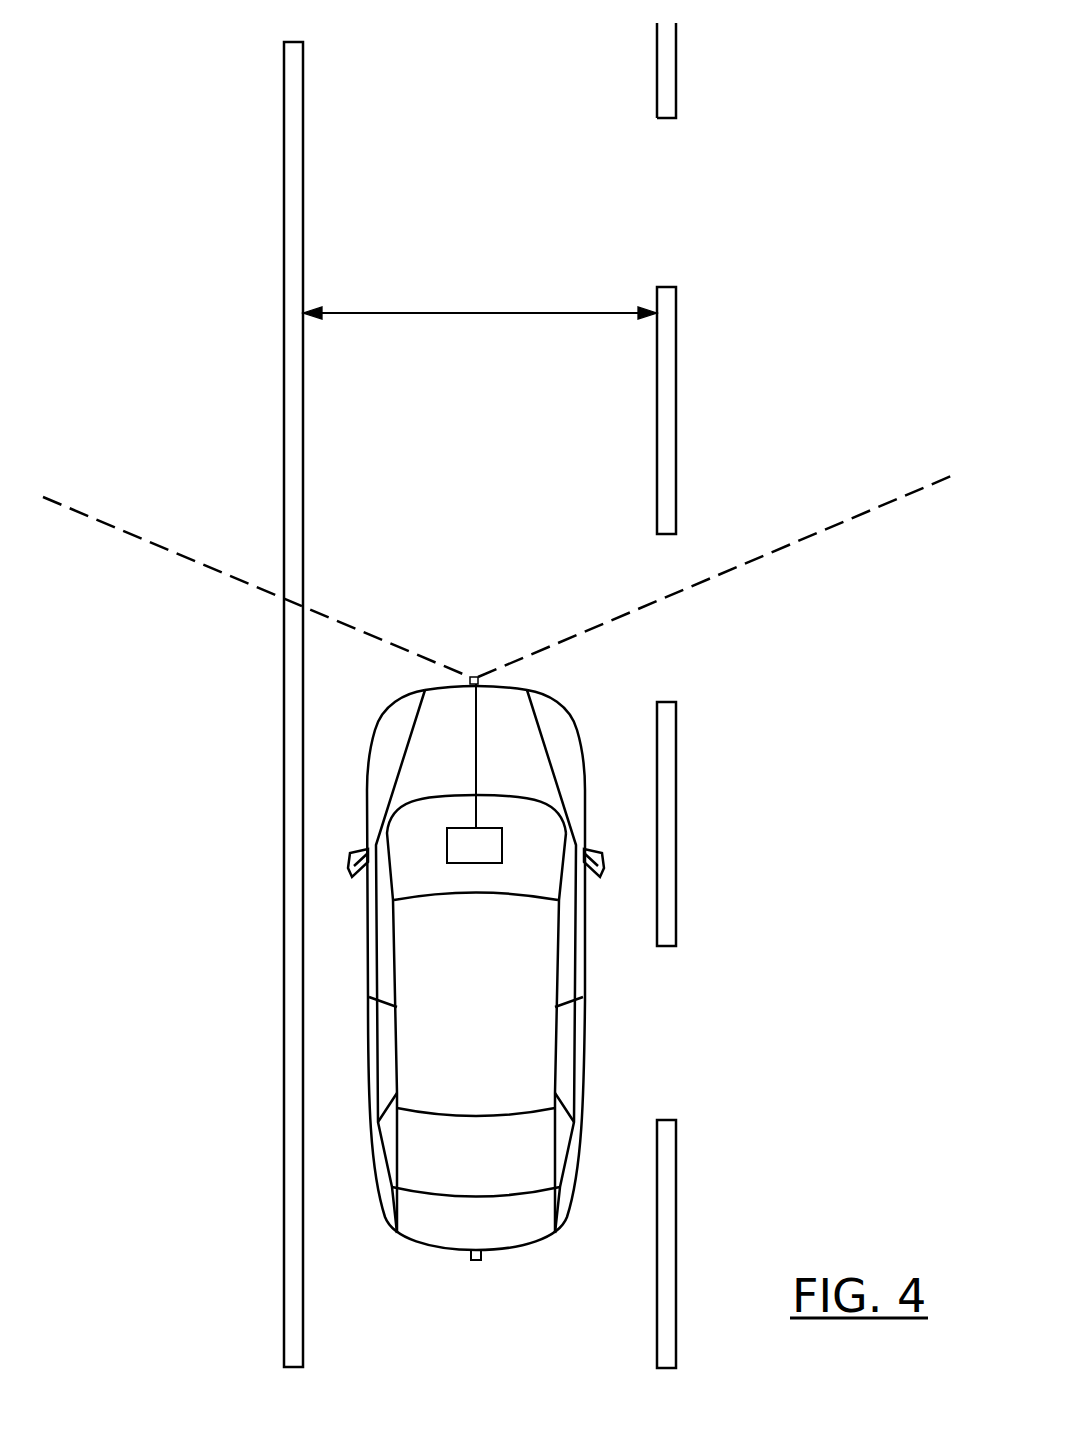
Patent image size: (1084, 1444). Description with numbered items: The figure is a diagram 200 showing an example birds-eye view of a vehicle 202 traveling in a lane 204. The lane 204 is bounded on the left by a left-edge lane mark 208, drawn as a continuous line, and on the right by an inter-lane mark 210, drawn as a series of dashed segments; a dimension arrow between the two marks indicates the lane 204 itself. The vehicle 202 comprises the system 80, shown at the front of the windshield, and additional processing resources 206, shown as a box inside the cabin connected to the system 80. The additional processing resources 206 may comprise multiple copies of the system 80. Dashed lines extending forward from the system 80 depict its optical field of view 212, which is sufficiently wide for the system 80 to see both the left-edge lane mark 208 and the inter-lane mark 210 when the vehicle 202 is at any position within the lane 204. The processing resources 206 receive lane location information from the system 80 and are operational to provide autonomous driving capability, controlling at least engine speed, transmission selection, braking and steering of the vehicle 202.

The diagram 200 is at (525, 46).
The vehicle 202 is at (398, 713).
The lane 204 is at (437, 313).
The additional processing resources 206 is at (472, 863).
The left-edge lane mark 208 is at (303, 423).
The inter-lane mark 210 is at (657, 423).
The optical field of view 212 is at (499, 575).
The system 80 is at (470, 687).